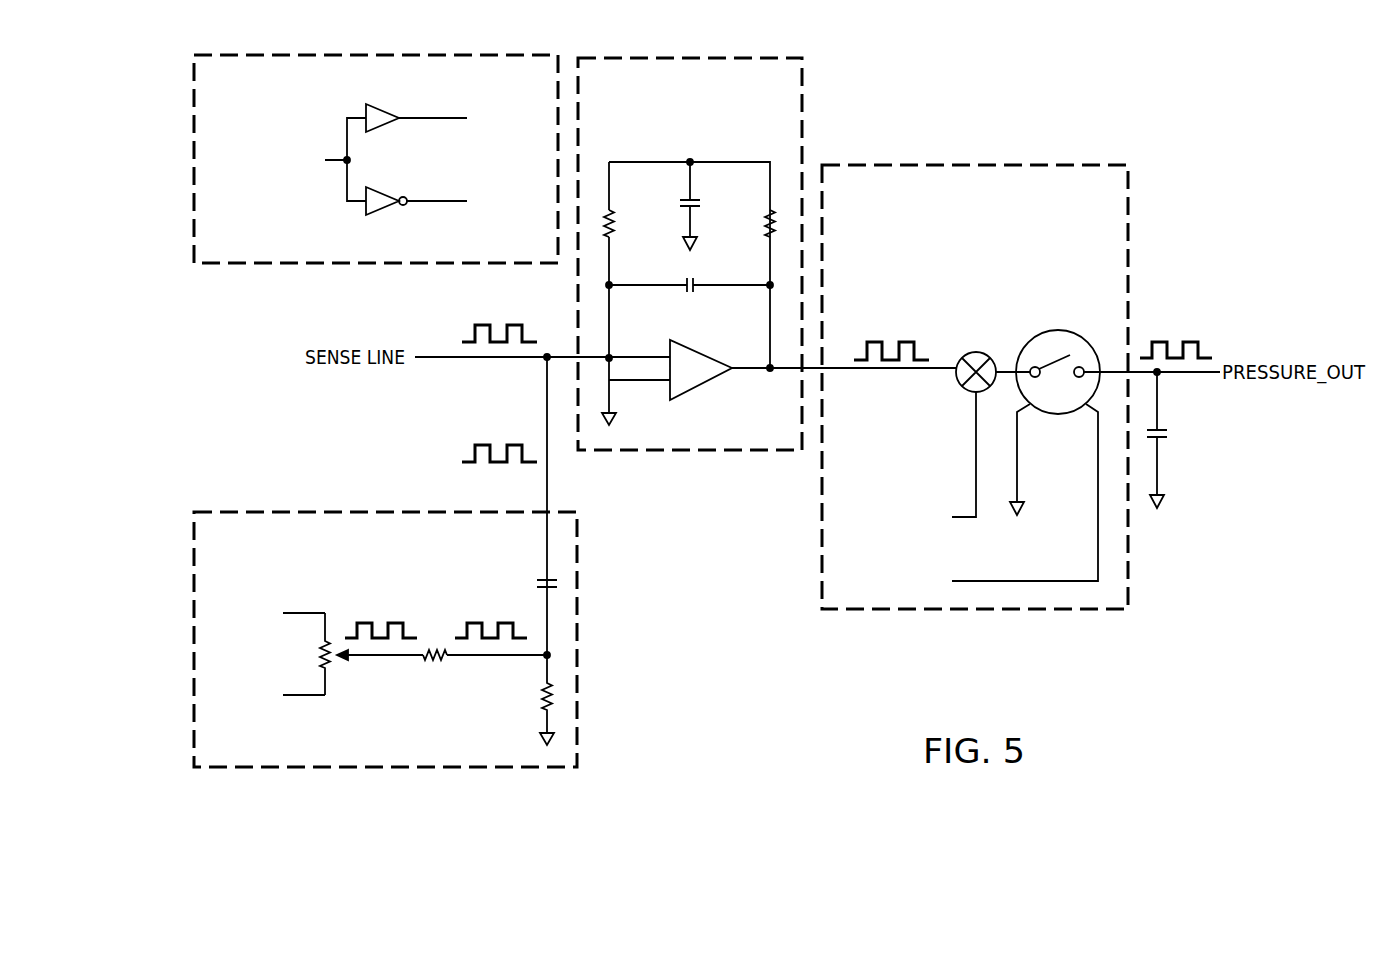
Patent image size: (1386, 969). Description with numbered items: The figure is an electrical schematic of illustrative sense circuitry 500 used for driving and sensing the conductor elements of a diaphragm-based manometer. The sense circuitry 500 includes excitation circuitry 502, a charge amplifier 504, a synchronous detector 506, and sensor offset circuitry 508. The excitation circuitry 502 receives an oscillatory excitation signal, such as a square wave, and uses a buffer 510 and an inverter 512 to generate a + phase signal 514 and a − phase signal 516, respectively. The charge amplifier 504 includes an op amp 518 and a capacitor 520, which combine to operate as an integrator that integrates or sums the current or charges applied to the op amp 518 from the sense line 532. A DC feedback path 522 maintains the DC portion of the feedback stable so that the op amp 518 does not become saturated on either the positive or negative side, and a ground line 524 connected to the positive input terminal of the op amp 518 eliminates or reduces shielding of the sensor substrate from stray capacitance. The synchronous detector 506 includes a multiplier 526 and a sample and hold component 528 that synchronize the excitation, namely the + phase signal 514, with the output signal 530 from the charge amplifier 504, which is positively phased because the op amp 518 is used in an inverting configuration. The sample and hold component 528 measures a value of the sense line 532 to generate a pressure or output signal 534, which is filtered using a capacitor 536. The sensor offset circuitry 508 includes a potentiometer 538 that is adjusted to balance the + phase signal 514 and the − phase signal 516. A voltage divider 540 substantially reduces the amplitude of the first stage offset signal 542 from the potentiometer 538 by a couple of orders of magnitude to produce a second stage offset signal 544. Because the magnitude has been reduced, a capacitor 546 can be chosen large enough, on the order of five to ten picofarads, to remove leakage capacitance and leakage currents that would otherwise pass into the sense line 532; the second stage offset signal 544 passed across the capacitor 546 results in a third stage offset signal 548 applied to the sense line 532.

The sense circuitry 500 is at (1068, 72).
The excitation circuitry 502 is at (376, 131).
The charge amplifier 504 is at (767, 225).
The synchronous detector 506 is at (1021, 418).
The sensor offset circuitry 508 is at (385, 670).
The buffer 510 is at (392, 108).
The inverter 512 is at (390, 214).
The + phase signal 514 is at (446, 117).
The − phase signal 516 is at (447, 203).
The op amp 518 is at (705, 352).
The capacitor 520 is at (684, 280).
The DC feedback path 522 is at (740, 161).
The ground line 524 is at (640, 381).
The multiplier 526 is at (967, 356).
The sample and hold component 528 is at (1058, 330).
The output signal 530 is at (876, 338).
The sense line 532 is at (438, 352).
The output signal 534 is at (1192, 340).
The capacitor 536 is at (1163, 450).
The potentiometer 538 is at (352, 683).
The voltage divider 540 is at (522, 684).
The first stage offset signal 542 is at (365, 622).
The second stage offset signal 544 is at (475, 622).
The capacitor 546 is at (540, 578).
The third stage offset signal 548 is at (485, 440).